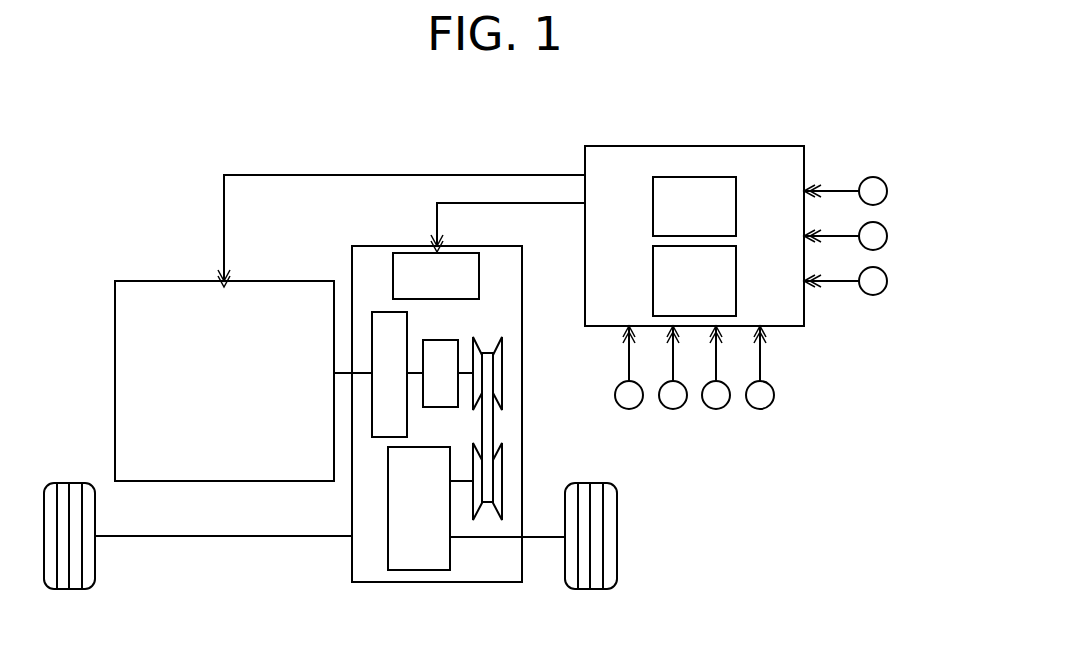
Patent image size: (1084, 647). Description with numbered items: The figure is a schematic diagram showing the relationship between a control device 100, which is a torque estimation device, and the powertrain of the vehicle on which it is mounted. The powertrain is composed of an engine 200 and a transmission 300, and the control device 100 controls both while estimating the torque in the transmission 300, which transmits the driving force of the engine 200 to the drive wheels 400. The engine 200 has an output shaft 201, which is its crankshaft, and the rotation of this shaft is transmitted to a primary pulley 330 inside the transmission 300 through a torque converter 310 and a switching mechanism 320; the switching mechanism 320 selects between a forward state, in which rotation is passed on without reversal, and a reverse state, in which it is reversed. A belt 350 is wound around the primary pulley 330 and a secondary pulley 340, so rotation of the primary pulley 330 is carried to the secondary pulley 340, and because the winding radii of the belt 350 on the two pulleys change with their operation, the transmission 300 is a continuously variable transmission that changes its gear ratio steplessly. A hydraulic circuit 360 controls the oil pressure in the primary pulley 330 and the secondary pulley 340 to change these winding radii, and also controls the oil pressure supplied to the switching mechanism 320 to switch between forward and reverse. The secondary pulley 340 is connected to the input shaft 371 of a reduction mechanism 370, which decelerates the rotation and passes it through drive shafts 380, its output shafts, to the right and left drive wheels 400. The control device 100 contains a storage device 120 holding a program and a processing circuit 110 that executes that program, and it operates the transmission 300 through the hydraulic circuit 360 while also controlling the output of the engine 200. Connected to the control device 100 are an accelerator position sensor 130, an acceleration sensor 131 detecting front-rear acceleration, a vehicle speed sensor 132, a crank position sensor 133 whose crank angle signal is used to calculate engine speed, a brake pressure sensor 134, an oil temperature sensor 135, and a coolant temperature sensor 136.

The control device 100 is at (755, 146).
The processing circuit 110 is at (736, 208).
The storage device 120 is at (736, 275).
The accelerator position sensor 130 is at (887, 191).
The acceleration sensor 131 is at (887, 236).
The vehicle speed sensor 132 is at (887, 281).
The crank position sensor 133 is at (630, 409).
The brake pressure sensor 134 is at (673, 409).
The oil temperature sensor 135 is at (716, 409).
The coolant temperature sensor 136 is at (760, 409).
The engine 200 is at (157, 281).
The output shaft 201 is at (345, 373).
The transmission 300 is at (447, 582).
The torque converter 310 is at (383, 312).
The switching mechanism 320 is at (440, 340).
The primary pulley 330 is at (502, 373).
The secondary pulley 340 is at (503, 462).
The belt 350 is at (493, 422).
The hydraulic circuit 360 is at (479, 273).
The reduction mechanism 370 is at (388, 512).
The input shaft 371 is at (463, 478).
The drive shafts 380 is at (223, 540).
The drive wheels 400 is at (63, 590).